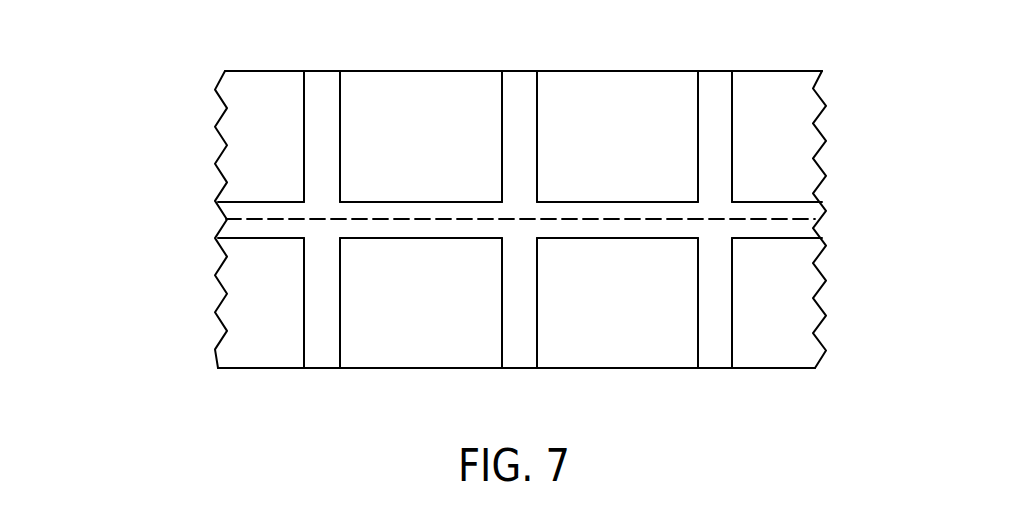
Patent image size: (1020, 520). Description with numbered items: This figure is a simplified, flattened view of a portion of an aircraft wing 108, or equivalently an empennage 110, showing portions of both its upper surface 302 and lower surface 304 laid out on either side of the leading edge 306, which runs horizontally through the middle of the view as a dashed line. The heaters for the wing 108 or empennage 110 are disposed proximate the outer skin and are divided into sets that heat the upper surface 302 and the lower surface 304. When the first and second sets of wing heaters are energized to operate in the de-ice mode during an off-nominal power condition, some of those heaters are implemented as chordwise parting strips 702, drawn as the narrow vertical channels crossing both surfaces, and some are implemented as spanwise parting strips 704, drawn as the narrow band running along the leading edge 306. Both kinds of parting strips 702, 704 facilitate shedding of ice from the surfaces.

The aircraft wing 108 is at (439, 207).
The empennage 110 is at (520, 219).
The upper surface 302 is at (814, 117).
The lower surface 304 is at (812, 265).
The leading edge 306 is at (764, 217).
The chordwise parting strips 702 is at (321, 78).
The spanwise parting strips 704 is at (224, 229).